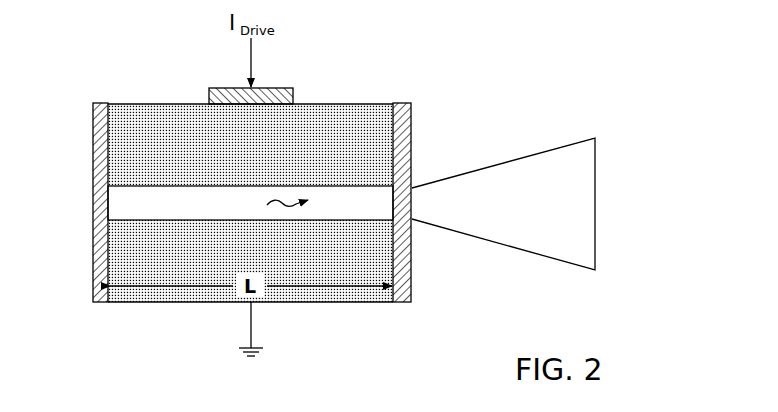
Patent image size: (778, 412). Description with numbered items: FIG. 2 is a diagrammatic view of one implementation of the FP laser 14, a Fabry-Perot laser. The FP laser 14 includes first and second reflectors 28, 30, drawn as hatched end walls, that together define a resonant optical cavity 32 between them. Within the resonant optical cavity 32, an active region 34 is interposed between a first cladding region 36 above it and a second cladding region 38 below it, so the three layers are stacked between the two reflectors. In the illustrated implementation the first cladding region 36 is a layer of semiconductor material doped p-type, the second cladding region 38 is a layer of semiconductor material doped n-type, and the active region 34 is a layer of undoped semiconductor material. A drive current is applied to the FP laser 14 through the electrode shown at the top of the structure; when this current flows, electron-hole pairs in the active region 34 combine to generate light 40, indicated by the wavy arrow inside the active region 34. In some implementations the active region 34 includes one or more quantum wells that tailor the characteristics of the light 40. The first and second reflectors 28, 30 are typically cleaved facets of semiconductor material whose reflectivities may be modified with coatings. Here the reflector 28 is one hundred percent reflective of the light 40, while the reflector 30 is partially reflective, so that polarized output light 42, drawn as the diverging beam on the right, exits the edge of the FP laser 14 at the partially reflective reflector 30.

The FP laser 14 is at (496, 68).
The first reflector 28 is at (92, 202).
The second reflector 30 is at (412, 137).
The resonant optical cavity 32 is at (162, 102).
The active region 34 is at (250, 203).
The first cladding region 36 is at (250, 145).
The second cladding region 38 is at (250, 261).
The light 40 is at (290, 207).
The polarized output light 42 is at (597, 192).